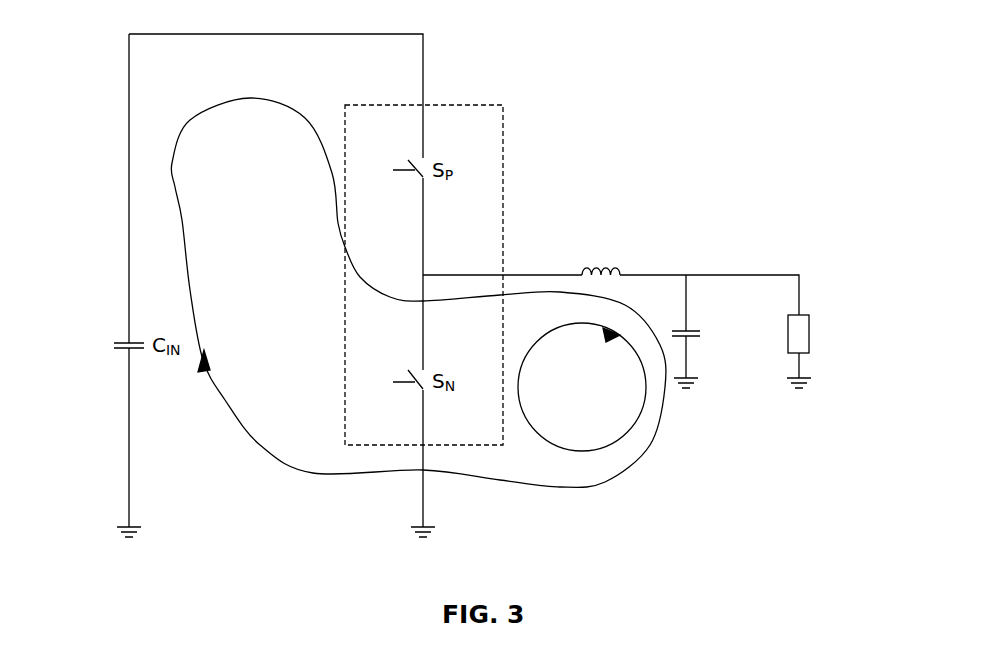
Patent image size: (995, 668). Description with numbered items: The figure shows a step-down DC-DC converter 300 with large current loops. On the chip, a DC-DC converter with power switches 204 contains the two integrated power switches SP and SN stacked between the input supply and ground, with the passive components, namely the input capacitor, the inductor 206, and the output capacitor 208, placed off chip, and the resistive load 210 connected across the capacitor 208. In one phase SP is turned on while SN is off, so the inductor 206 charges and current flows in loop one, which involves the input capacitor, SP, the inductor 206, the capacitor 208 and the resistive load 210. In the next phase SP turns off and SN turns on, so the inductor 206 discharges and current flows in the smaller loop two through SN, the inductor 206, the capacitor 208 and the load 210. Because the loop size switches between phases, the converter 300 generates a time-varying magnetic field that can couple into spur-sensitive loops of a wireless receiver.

The DC-DC converter with one or more power switches 204 is at (503, 176).
The inductor 206 is at (612, 263).
The capacitor 208 is at (703, 338).
The resistive load 210 is at (811, 344).
The step-down DC-DC converter 300 is at (615, 519).